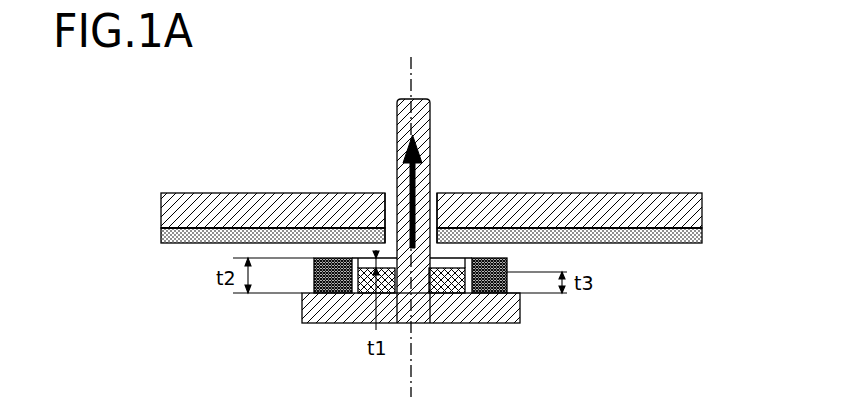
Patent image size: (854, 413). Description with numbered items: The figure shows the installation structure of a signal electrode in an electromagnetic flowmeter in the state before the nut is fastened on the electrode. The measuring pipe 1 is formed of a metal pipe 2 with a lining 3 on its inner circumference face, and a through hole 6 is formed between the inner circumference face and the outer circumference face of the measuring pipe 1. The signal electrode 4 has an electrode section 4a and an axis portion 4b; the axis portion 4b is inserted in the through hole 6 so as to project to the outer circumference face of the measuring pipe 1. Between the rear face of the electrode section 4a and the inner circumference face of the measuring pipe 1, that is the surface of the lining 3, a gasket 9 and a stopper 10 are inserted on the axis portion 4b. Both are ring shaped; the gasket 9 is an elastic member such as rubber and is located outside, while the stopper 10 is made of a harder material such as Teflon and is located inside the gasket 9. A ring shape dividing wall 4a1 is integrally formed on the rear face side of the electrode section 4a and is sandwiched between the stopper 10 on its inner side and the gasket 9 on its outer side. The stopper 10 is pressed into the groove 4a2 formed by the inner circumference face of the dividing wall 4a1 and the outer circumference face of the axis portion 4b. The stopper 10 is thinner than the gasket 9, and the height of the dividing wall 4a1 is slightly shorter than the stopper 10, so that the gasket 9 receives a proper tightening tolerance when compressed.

The measuring pipe 1 is at (433, 217).
The metal pipe 2 is at (668, 194).
The lining 3 is at (650, 237).
The signal electrode 4 is at (408, 244).
The electrode section 4a is at (310, 323).
The ring shape dividing wall 4a1 is at (355, 255).
The groove 4a2 is at (356, 280).
The axis portion 4b is at (430, 140).
The through hole 6 is at (385, 193).
The gasket 9 is at (313, 286).
The stopper 10 is at (455, 323).